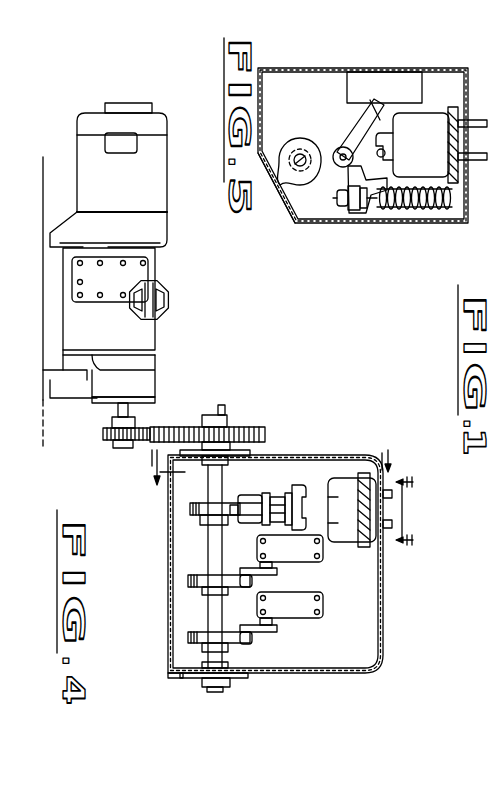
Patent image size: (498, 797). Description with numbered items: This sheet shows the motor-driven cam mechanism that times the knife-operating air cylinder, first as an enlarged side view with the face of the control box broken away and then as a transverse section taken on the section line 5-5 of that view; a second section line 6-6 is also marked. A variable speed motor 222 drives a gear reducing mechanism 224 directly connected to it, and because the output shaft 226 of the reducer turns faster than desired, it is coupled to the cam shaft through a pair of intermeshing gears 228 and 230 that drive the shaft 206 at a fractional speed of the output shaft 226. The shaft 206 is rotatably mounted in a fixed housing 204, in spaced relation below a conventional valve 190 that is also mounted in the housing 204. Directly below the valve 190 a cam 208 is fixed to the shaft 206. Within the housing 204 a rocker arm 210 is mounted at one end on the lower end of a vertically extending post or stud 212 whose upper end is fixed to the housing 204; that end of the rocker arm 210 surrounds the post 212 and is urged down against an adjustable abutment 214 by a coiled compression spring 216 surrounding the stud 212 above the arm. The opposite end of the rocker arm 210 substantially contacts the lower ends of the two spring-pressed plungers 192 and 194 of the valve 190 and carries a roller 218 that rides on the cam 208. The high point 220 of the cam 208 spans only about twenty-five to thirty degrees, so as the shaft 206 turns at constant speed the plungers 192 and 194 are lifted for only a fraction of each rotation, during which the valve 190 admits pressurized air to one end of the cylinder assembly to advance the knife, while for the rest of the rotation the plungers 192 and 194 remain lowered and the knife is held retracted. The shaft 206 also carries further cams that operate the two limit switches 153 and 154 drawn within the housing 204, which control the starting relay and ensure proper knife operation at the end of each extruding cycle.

In FIG. 4, the limit switch 153 is at (318, 561).
In FIG. 4, the limit switch 154 is at (320, 618).
In FIG. 5, the valve 190 is at (440, 145).
In FIG. 4, the valve 190 is at (340, 478).
In FIG. 5, the plunger 192 is at (396, 138).
In FIG. 4, the plunger 192 is at (308, 486).
In FIG. 4, the plunger 194 is at (306, 512).
In FIG. 5, the housing 204 is at (463, 68).
In FIG. 4, the housing 204 is at (377, 650).
In FIG. 5, the shaft 206 is at (301, 154).
In FIG. 4, the shaft 206 is at (207, 540).
In FIG. 5, the cam 208 is at (289, 150).
In FIG. 4, the cam 208 is at (190, 512).
In FIG. 5, the rocker arm 210 is at (364, 150).
In FIG. 5, the post or stud 212 is at (427, 212).
In FIG. 5, the abutment 214 is at (353, 214).
In FIG. 4, the abutment 214 is at (190, 580).
In FIG. 5, the coiled compression spring 216 is at (402, 212).
In FIG. 4, the coiled compression spring 216 is at (190, 640).
In FIG. 5, the roller 218 is at (341, 172).
In FIG. 5, the high point of the cam 220 is at (289, 188).
In FIG. 4, the variable speed motor 222 is at (108, 175).
In FIG. 4, the gear reducing mechanism 224 is at (73, 324).
In FIG. 4, the output shaft 226 is at (115, 412).
In FIG. 4, the gear 228 is at (108, 448).
In FIG. 4, the gear 230 is at (186, 426).
In FIG. 4, the section line 5- 5 is at (264, 453).
In FIG. 4, the section line 6- 6 is at (420, 511).